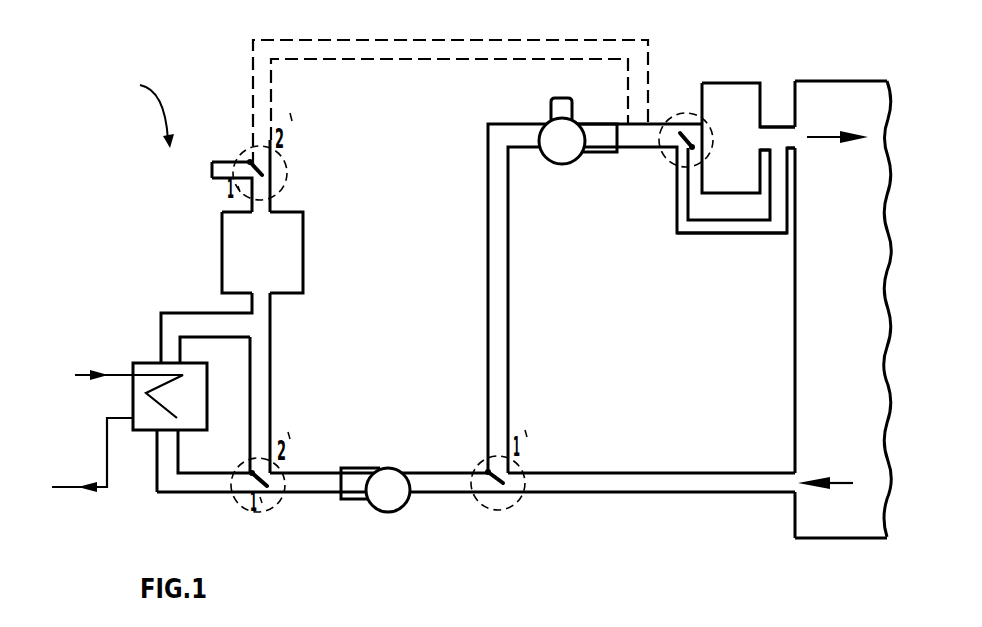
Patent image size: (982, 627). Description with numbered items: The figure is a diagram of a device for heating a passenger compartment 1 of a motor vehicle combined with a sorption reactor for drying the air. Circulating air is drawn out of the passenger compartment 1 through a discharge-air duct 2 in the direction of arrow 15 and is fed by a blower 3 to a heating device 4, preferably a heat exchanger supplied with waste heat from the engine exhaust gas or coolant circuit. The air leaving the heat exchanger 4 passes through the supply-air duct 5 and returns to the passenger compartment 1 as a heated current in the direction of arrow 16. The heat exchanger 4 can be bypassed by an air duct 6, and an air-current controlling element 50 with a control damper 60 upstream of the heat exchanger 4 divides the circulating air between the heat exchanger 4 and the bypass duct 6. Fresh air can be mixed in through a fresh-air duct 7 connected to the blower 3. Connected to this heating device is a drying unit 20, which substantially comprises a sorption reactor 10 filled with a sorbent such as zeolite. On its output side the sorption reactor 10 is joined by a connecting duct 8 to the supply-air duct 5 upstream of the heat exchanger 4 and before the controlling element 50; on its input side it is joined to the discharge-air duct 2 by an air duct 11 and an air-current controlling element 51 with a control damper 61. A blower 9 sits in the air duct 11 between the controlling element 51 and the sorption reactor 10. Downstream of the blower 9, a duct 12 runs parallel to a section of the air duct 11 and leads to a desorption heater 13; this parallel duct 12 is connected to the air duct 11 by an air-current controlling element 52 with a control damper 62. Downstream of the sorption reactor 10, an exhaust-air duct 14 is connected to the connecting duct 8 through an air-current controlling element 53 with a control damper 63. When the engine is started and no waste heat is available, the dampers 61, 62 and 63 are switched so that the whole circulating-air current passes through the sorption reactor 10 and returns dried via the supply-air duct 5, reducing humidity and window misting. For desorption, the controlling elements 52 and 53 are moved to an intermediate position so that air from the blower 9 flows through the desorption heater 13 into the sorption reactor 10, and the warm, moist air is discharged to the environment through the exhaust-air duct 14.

The passenger compartment 1 is at (795, 303).
The discharge-air duct 2 is at (678, 479).
The blower 3 is at (556, 158).
The heating device 4 is at (723, 96).
The supply-air duct 5 is at (780, 120).
The air duct 6 is at (718, 232).
The fresh-air duct 7 is at (563, 108).
The connecting duct 8 is at (354, 46).
The blower 9 is at (388, 512).
The sorption reactor 10 is at (303, 256).
The air duct 11 is at (270, 374).
The duct 12 is at (167, 458).
The desorption heater 13 is at (148, 362).
The exhaust-air duct 14 is at (212, 172).
The arrow 15 is at (838, 481).
The arrow 16 is at (812, 137).
The drying unit 20 is at (143, 108).
The air-current controlling element 50 is at (660, 153).
The air-current controlling element 51 is at (526, 470).
The air-current controlling element 52 is at (285, 465).
The air-current controlling element 53 is at (238, 155).
The control damper 60 is at (680, 158).
The control damper 61 is at (518, 500).
The control damper 62 is at (236, 485).
The control damper 63 is at (287, 173).